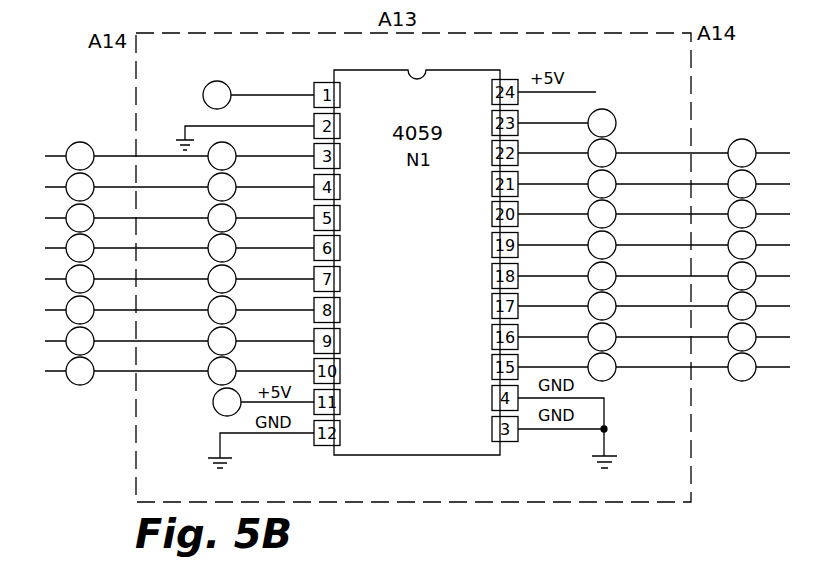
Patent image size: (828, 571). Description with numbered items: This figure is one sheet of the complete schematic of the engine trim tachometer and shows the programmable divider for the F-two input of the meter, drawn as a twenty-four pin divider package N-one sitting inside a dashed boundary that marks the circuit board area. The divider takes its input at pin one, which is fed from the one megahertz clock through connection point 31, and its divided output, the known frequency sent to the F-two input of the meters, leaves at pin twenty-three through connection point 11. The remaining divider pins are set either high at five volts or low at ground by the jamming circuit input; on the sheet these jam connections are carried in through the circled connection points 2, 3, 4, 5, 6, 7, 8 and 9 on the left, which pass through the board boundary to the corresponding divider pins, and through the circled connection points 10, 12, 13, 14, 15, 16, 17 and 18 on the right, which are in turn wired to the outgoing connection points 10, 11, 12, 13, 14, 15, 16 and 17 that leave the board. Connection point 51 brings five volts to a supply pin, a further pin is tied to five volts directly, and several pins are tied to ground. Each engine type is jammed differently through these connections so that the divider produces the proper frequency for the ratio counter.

The connector pin 2 is at (179, 156).
The connector pin 3 is at (179, 187).
The connector pin 4 is at (179, 218).
The connector pin 5 is at (179, 248).
The connector pin 6 is at (179, 279).
The connector pin 7 is at (179, 310).
The connector pin 8 is at (179, 341).
The connector pin 9 is at (179, 371).
The connector pin 10 is at (654, 367).
The connector pin 11 is at (654, 230).
The connector pin 12 is at (654, 321).
The connector pin 13 is at (654, 291).
The connector pin 14 is at (654, 260).
The connector pin 15 is at (654, 229).
The connector pin 16 is at (654, 199).
The connector pin 17 is at (654, 168).
The connector pin 18 is at (623, 153).
The connector pin 31 is at (258, 95).
The connector pin 51 is at (263, 402).